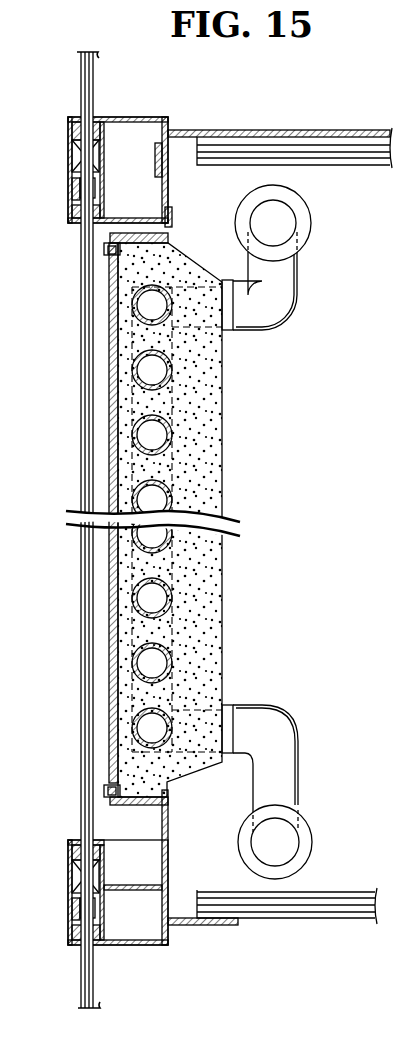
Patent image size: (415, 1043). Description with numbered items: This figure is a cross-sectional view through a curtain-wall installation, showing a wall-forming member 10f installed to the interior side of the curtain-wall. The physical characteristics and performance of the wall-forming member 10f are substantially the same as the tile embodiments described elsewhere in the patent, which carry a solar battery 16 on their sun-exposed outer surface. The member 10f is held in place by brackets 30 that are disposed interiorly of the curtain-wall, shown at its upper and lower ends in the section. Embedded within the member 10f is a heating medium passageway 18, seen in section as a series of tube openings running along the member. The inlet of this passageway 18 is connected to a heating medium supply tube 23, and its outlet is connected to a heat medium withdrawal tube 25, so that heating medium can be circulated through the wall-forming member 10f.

The wall-forming member 10f is at (224, 393).
The solar battery 16 is at (109, 428).
The heating medium passageway 18 is at (155, 438).
The heating medium supply tube 23 is at (285, 226).
The heat medium withdrawal tube 25 is at (283, 848).
The bracket 30 is at (112, 236).